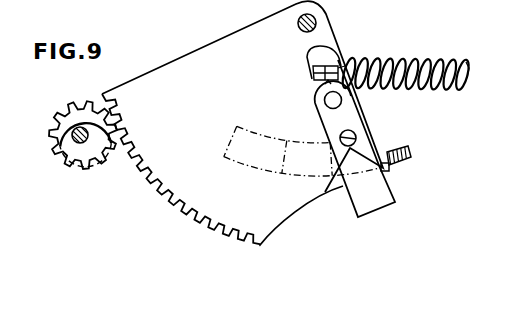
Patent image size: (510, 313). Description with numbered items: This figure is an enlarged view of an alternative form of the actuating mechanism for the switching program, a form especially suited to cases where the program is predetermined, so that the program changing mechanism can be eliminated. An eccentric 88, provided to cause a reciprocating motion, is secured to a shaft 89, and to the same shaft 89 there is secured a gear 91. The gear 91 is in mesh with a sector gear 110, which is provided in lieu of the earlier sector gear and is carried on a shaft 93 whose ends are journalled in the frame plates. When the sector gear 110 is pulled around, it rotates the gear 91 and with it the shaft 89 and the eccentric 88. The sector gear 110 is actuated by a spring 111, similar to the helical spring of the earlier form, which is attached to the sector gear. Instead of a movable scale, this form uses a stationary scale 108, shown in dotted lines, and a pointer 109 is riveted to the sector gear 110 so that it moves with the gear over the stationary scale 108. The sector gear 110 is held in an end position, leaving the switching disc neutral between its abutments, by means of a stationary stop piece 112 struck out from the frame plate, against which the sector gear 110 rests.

The eccentric 88 is at (89, 173).
The shaft 89 is at (72, 130).
The gear 91 is at (62, 128).
The shaft 93 is at (317, 23).
The stationary scale 108 is at (268, 128).
The pointer 109 is at (362, 187).
The sector gear 110 is at (190, 75).
The spring 111 is at (420, 56).
The stationary stop piece 112 is at (402, 156).